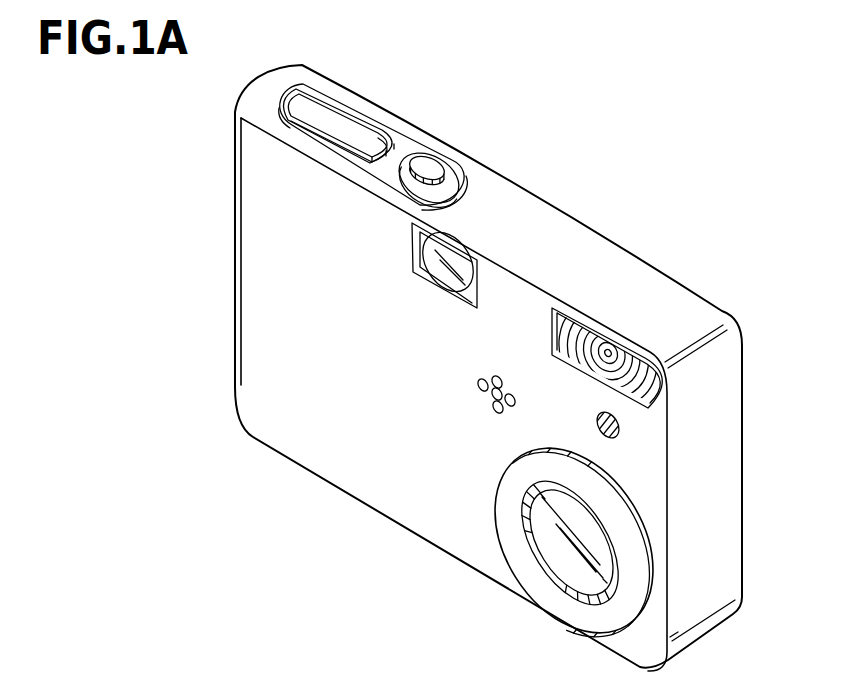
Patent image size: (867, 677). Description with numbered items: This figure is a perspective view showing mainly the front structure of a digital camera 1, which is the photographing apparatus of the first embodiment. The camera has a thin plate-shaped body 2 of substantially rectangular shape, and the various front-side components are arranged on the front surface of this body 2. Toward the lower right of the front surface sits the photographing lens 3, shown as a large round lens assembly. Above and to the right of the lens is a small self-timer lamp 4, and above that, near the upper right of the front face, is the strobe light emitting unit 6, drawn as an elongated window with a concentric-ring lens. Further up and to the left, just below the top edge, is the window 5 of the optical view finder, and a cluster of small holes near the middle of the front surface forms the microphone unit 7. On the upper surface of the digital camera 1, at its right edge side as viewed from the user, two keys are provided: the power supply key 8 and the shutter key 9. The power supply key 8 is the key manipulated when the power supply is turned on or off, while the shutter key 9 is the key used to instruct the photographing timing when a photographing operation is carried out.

The digital camera 1 is at (636, 193).
The body 2 is at (742, 390).
The photographing lens 3 is at (552, 540).
The self-timer lamp 4 is at (616, 424).
The window of an optical view finder 5 is at (453, 258).
The strobe light emitting unit 6 is at (607, 353).
The microphone unit 7 is at (487, 393).
The power supply key 8 is at (430, 163).
The shutter key 9 is at (365, 128).